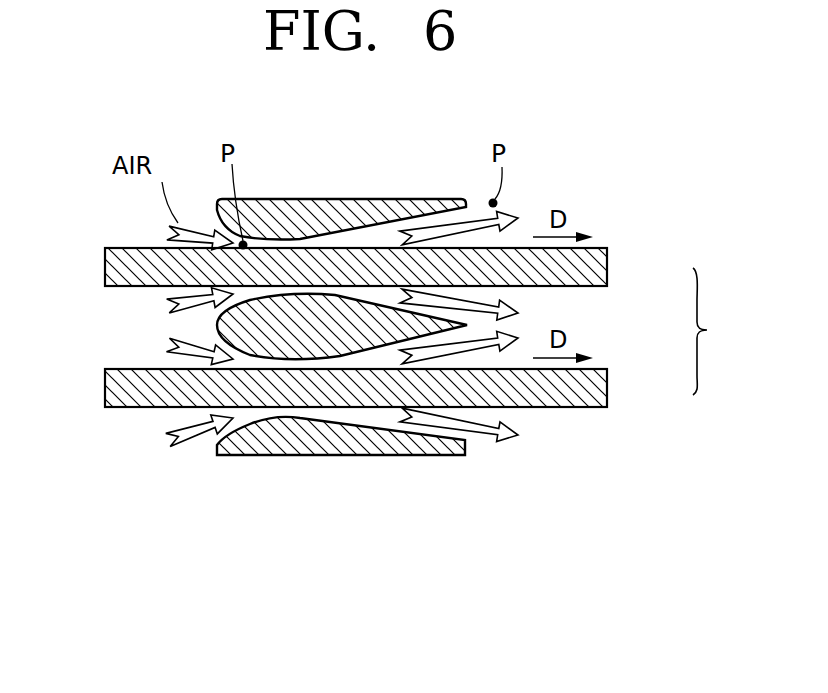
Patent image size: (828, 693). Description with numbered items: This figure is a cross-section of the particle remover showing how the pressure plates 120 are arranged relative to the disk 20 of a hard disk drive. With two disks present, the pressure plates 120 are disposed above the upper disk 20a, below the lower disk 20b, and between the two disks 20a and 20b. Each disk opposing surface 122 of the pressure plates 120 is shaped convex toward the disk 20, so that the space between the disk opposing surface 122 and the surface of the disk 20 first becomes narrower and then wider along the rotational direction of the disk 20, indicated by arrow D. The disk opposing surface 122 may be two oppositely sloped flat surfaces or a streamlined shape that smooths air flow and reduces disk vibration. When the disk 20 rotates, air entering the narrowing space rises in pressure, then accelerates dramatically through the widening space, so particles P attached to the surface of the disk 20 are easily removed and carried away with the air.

The disk 20 is at (719, 331).
The upper disk 20a is at (608, 270).
The lower disk 20b is at (608, 385).
The pressure plate 120 is at (360, 239).
The disk opposing surface 122 is at (383, 318).